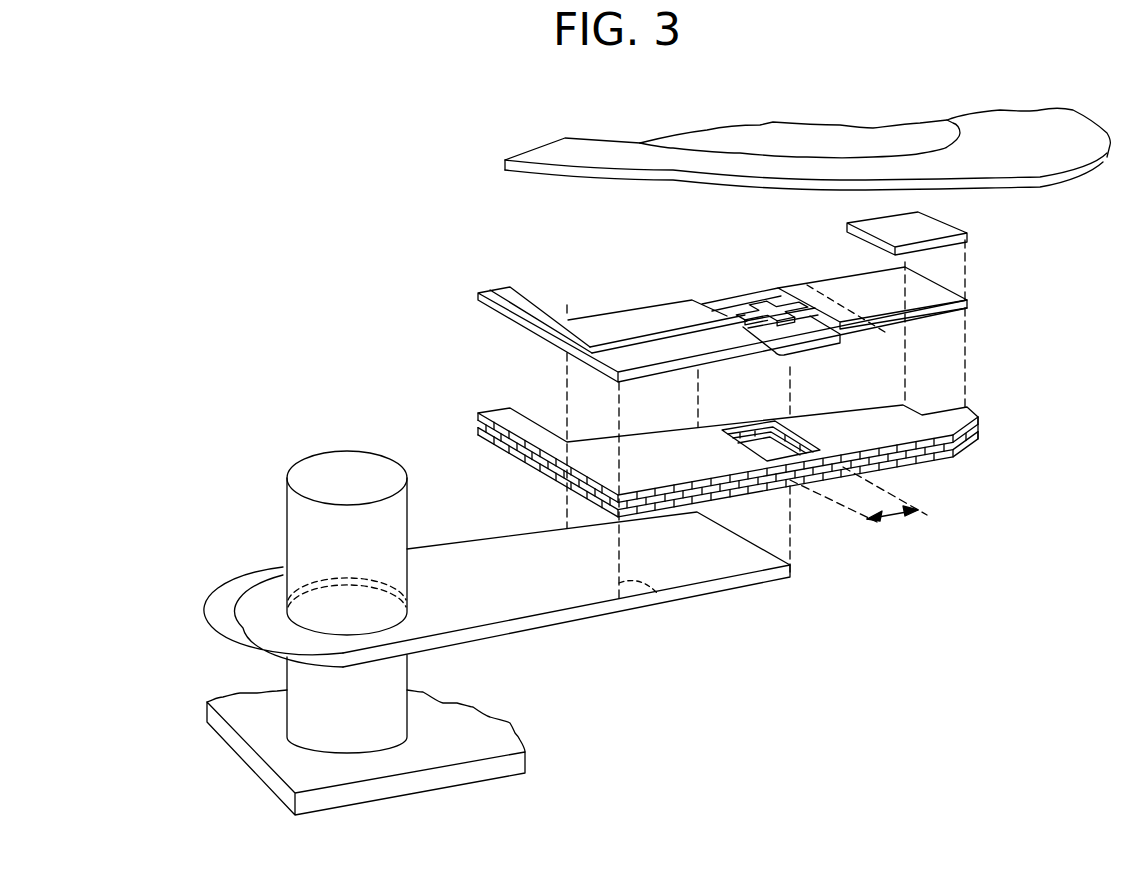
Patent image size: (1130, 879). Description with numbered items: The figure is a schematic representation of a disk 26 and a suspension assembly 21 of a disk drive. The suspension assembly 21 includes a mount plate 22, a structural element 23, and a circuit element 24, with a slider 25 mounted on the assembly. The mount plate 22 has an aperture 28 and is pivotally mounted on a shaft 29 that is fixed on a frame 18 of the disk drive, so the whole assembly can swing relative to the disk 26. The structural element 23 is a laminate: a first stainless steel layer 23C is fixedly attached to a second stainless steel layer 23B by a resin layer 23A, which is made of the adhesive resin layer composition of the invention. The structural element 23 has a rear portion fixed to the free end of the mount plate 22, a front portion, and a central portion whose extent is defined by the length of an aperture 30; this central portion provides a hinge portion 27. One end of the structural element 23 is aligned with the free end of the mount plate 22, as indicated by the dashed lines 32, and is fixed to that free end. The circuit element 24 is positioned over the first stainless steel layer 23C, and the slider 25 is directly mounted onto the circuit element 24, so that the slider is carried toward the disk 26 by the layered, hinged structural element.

The frame 18 is at (520, 740).
The suspension assembly 21 is at (449, 294).
The mount plate 22 is at (560, 628).
The structural element 23 is at (686, 436).
The resin layer 23A is at (478, 428).
The second stainless steel layer 23B is at (478, 435).
The first stainless steel layer 23C is at (500, 412).
The circuit element 24 is at (607, 315).
The slider 25 is at (967, 233).
The disk 26 is at (525, 157).
The hinge portion 27 is at (803, 347).
The aperture 28 is at (290, 633).
The shaft 29 is at (390, 678).
The aperture 30 is at (757, 450).
The dashed lines 32 is at (568, 505).